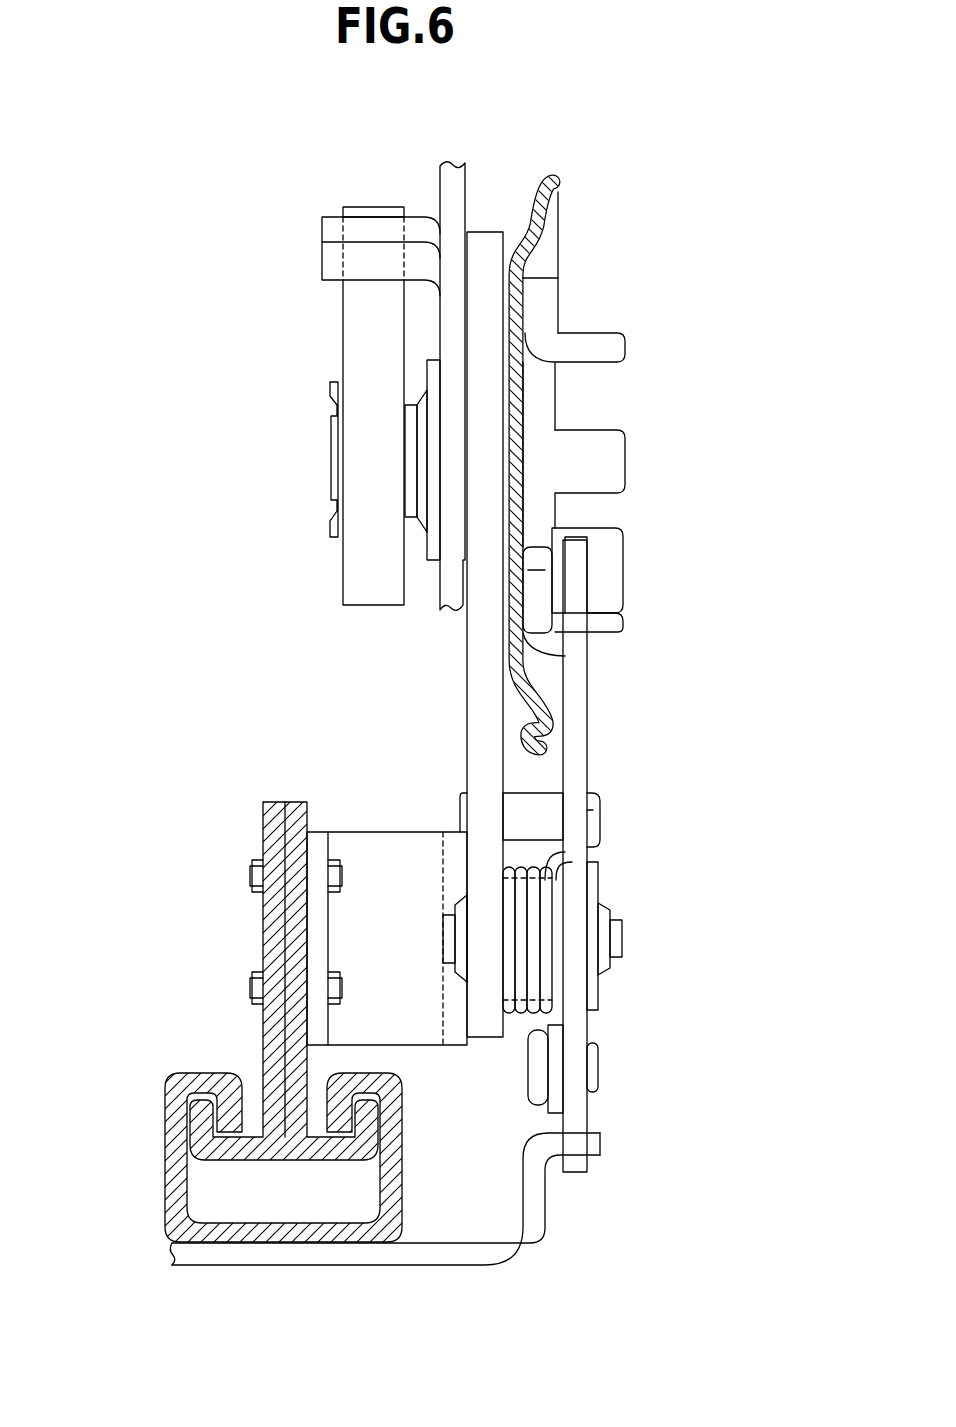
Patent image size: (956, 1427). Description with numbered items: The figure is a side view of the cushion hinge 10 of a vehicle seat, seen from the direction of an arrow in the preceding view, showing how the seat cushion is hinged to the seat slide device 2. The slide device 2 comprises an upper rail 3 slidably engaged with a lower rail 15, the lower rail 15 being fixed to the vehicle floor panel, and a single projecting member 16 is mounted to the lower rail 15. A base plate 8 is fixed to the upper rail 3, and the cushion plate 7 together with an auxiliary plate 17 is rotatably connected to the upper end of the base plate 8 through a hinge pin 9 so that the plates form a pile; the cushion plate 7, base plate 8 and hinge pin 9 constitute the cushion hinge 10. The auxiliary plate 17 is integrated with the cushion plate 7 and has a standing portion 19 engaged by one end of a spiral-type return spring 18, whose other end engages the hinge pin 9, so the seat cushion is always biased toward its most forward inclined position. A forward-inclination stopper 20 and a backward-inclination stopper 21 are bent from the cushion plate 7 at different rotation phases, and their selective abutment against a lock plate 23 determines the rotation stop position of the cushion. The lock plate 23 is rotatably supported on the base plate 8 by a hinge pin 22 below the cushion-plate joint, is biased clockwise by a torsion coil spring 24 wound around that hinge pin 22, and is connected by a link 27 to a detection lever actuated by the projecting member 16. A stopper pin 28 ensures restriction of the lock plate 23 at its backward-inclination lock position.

The seat slide device 2 is at (150, 1186).
The upper rail 3 is at (270, 944).
The cushion plate 7 is at (553, 213).
The base plate 8 is at (483, 698).
The hinge pin 9 is at (613, 453).
The cushion hinge 10 is at (605, 683).
The lower rail 15 is at (332, 1236).
The projecting member 16 is at (597, 1142).
The auxiliary plate 17 is at (441, 187).
The return spring 18 is at (360, 347).
The standing portion 19 is at (330, 258).
The forward-inclination stopper 20 is at (613, 345).
The backward-inclination stopper 21 is at (613, 553).
The hinge pin 22 is at (617, 935).
The lock plate 23 is at (583, 740).
The torsion coil spring 24 is at (553, 968).
The link 27 is at (548, 1107).
The stopper pin 28 is at (597, 800).